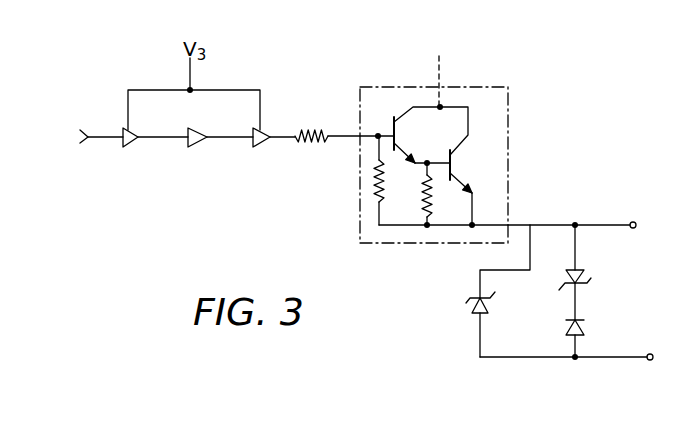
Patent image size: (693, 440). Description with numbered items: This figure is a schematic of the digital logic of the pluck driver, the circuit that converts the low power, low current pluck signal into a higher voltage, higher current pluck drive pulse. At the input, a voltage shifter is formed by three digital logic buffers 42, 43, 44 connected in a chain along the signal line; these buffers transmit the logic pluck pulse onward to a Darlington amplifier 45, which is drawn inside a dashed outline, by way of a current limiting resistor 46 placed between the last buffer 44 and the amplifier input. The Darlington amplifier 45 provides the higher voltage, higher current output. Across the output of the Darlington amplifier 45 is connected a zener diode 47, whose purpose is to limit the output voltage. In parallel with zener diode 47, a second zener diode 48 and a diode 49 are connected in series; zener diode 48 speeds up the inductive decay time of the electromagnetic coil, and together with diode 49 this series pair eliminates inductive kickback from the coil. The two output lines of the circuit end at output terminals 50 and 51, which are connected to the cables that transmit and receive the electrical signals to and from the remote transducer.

The digital logic buffer 42 is at (132, 148).
The digital logic buffer 43 is at (203, 145).
The digital logic buffer 44 is at (258, 145).
The Darlington amplifier 45 is at (386, 97).
The current limiting resistor 46 is at (322, 130).
The zener diode 47 is at (468, 303).
The zener diode 48 is at (588, 282).
The diode 49 is at (586, 335).
The output terminal 50 is at (650, 354).
The output terminal 51 is at (652, 202).